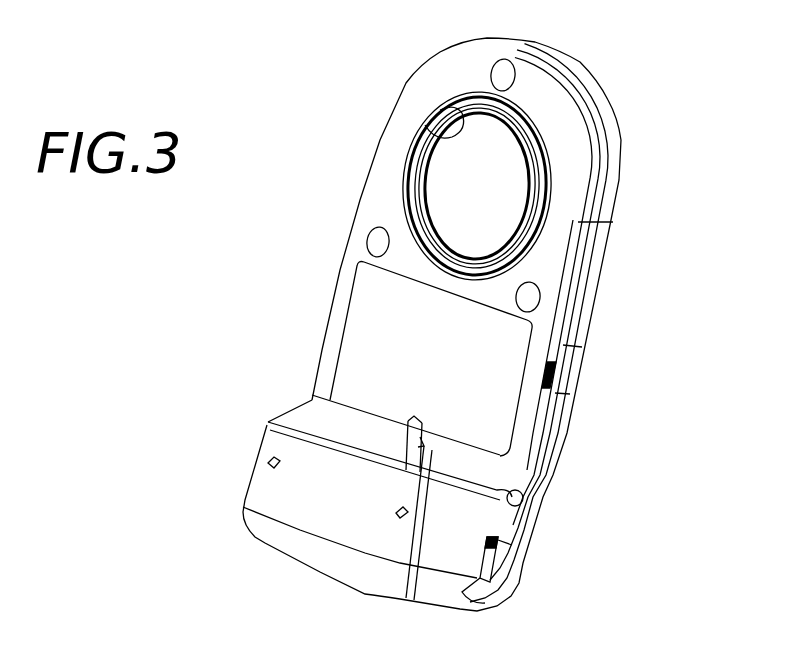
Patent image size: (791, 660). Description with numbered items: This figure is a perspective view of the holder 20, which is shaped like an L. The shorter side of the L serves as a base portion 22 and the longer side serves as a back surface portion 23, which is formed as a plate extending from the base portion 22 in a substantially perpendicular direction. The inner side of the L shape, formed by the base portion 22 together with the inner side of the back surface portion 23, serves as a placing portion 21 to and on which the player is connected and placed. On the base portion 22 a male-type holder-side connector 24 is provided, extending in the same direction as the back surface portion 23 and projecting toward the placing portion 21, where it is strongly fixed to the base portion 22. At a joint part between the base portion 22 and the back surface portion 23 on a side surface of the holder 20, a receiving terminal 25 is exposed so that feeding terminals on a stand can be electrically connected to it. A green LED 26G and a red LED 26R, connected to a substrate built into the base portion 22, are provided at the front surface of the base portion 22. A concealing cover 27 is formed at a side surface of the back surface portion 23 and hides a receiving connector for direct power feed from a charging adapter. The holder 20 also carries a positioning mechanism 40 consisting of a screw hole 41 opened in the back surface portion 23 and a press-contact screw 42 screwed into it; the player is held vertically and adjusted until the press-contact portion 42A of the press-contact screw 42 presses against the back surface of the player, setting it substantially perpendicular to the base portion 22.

The holder 20 is at (642, 148).
The placing portion 21 is at (375, 338).
The base portion 22 is at (288, 532).
The back surface portion 23 is at (580, 293).
The holder-side connector 24 is at (333, 417).
The receiving terminal 25 is at (523, 500).
The green LED 26G is at (268, 465).
The red LED 26R is at (397, 516).
The concealing cover 27 is at (553, 395).
The positioning mechanism 40 is at (489, 178).
The screw hole 41 is at (425, 125).
The press-contact screw 42 is at (504, 185).
The press-contact portion 42A is at (500, 172).